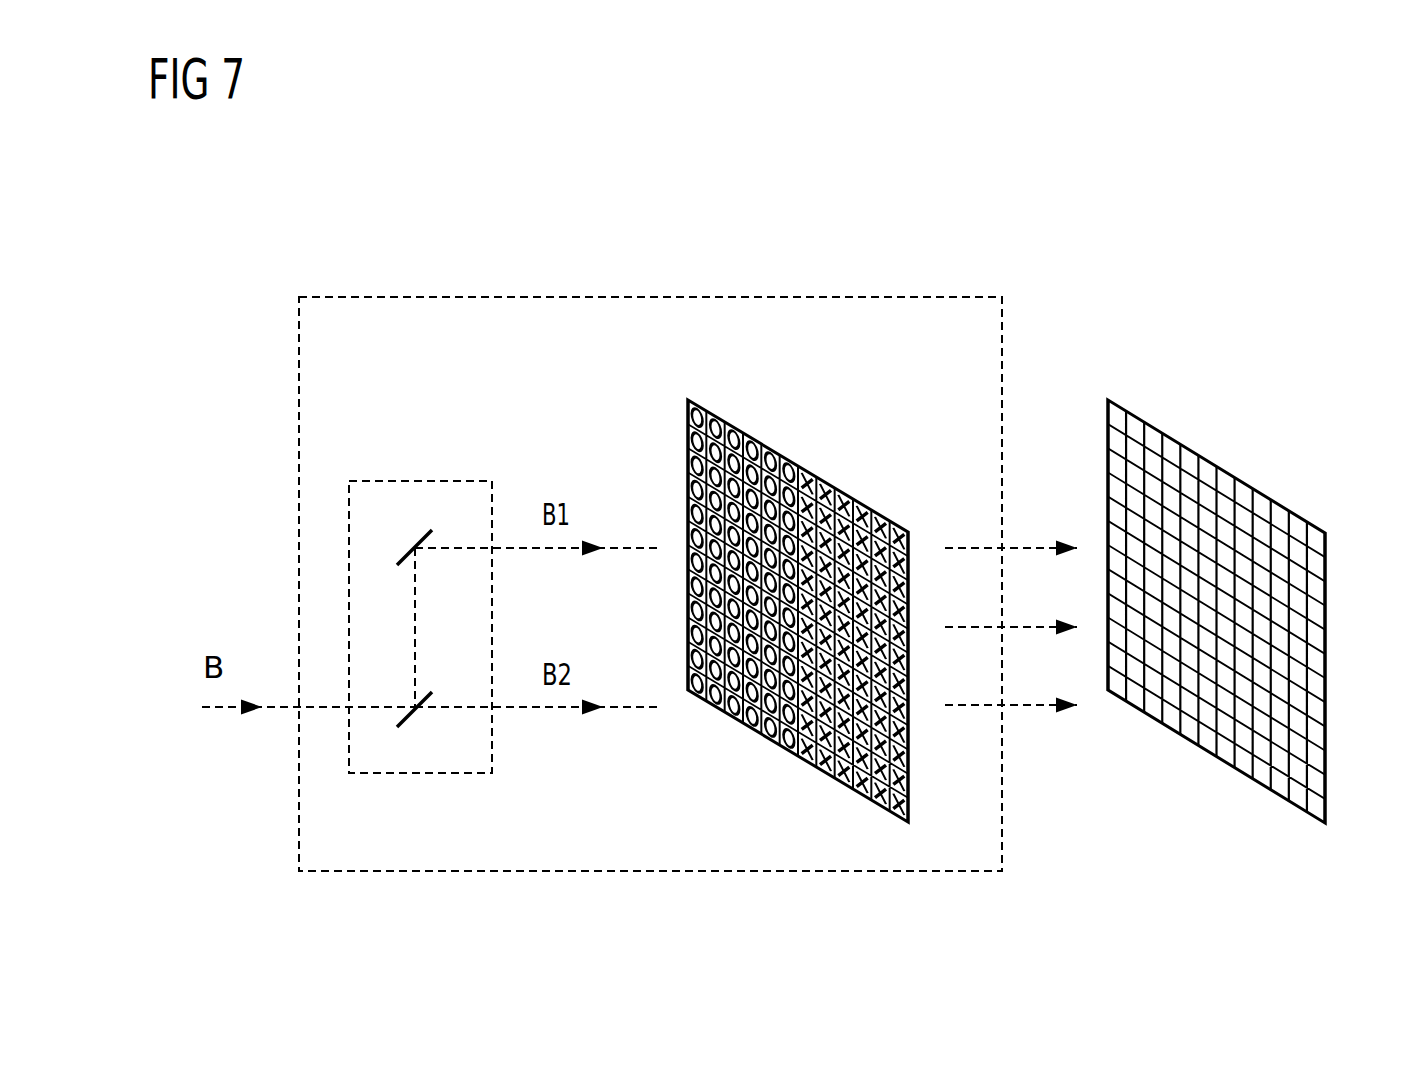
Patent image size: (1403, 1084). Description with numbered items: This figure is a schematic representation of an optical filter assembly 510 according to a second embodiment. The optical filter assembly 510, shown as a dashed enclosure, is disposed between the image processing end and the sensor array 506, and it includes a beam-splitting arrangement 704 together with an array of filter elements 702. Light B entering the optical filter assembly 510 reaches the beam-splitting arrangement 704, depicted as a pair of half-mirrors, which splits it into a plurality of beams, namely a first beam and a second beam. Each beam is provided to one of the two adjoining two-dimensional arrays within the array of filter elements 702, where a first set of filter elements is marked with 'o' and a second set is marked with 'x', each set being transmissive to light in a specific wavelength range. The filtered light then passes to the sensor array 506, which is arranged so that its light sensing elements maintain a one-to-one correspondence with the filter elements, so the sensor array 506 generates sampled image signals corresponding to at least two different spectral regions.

The optical filter assembly 510 is at (633, 297).
The beam-splitting arrangement 704 is at (418, 481).
The array of filter elements 702 is at (797, 466).
The sensor array 506 is at (1215, 470).